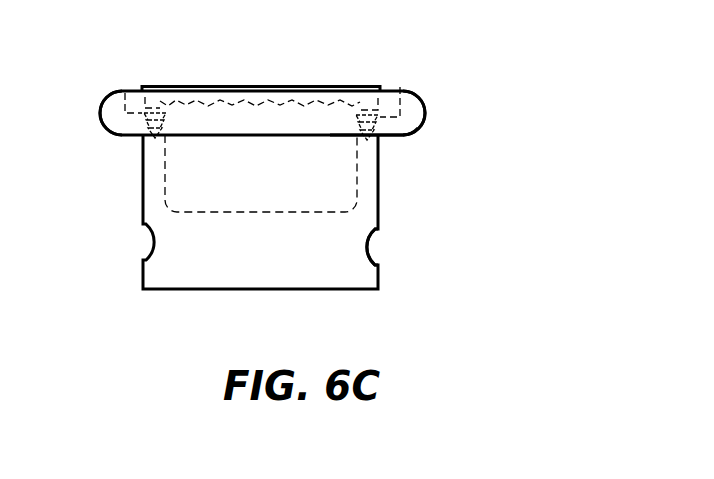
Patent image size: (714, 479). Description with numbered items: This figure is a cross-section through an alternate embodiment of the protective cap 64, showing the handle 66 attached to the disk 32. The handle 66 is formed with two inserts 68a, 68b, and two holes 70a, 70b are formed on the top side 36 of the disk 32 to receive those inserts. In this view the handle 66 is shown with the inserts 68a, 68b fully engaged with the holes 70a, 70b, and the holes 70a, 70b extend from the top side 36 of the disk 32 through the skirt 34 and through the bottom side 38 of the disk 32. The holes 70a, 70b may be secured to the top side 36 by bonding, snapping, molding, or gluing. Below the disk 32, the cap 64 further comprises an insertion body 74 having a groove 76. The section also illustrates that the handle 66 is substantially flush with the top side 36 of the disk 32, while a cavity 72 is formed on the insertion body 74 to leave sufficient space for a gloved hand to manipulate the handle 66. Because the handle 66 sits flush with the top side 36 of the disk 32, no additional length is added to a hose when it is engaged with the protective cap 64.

The disk 32 is at (417, 97).
The skirt 34 is at (415, 115).
The top side 36 is at (102, 98).
The bottom side 38 is at (393, 142).
The protective cap 64 is at (548, 81).
The handle 66 is at (243, 87).
The insert 68a is at (125, 93).
The insert 68b is at (400, 87).
The hole 70a is at (140, 133).
The hole 70b is at (356, 126).
The cavity 72 is at (300, 206).
The insertion body 74 is at (202, 276).
The groove 76 is at (378, 249).